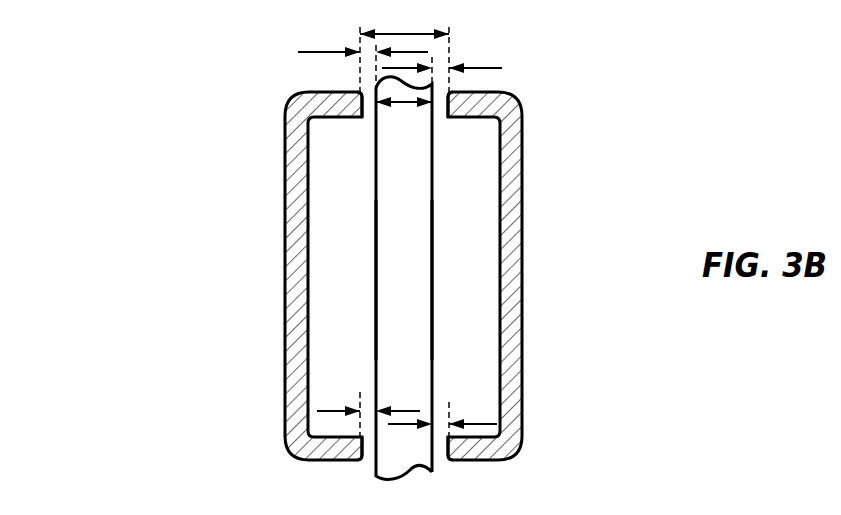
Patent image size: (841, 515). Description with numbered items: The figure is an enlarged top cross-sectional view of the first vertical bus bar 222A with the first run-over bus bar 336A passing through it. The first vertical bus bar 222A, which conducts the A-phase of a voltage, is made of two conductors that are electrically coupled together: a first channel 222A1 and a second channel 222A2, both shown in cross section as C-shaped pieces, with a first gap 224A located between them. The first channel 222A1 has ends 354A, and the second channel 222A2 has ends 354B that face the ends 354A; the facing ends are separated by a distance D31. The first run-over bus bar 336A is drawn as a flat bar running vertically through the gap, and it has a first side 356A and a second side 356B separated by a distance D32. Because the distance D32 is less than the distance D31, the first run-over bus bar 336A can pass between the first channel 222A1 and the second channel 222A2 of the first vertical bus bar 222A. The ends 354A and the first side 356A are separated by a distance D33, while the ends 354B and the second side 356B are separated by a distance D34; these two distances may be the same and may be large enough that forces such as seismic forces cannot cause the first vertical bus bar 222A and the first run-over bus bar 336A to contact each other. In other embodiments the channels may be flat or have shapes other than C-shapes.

The first vertical bus bar 222A is at (400, 276).
The first channel 222A1 is at (285, 193).
The second channel 222A2 is at (522, 258).
The first gap 224A is at (454, 134).
The first run-over bus bar 336A is at (376, 317).
The ends 354A is at (360, 89).
The ends 354B is at (449, 89).
The first side 356A is at (376, 280).
The second side 356B is at (432, 299).
The distance D31 is at (407, 34).
The distance D32 is at (402, 103).
The distance D33 is at (330, 52).
The distance D34 is at (468, 68).